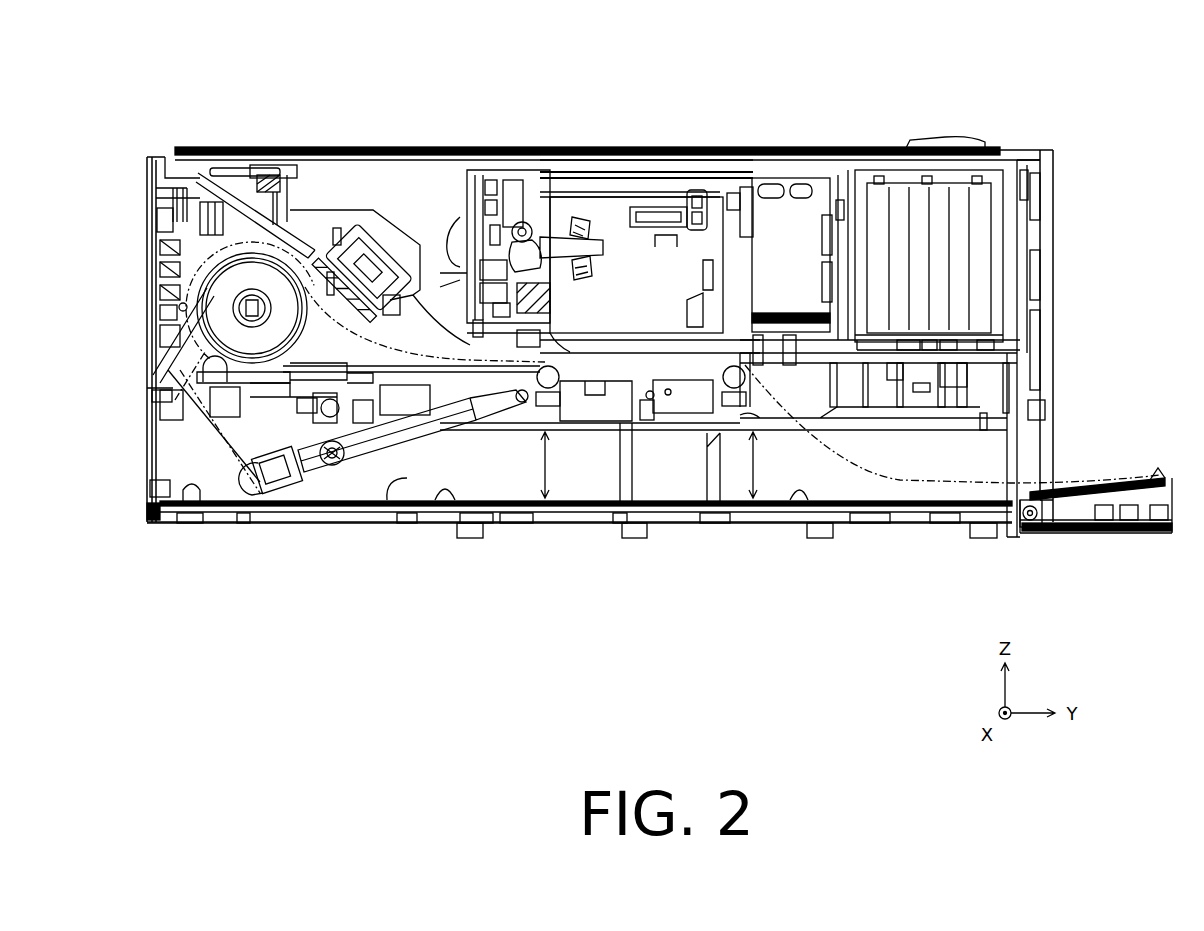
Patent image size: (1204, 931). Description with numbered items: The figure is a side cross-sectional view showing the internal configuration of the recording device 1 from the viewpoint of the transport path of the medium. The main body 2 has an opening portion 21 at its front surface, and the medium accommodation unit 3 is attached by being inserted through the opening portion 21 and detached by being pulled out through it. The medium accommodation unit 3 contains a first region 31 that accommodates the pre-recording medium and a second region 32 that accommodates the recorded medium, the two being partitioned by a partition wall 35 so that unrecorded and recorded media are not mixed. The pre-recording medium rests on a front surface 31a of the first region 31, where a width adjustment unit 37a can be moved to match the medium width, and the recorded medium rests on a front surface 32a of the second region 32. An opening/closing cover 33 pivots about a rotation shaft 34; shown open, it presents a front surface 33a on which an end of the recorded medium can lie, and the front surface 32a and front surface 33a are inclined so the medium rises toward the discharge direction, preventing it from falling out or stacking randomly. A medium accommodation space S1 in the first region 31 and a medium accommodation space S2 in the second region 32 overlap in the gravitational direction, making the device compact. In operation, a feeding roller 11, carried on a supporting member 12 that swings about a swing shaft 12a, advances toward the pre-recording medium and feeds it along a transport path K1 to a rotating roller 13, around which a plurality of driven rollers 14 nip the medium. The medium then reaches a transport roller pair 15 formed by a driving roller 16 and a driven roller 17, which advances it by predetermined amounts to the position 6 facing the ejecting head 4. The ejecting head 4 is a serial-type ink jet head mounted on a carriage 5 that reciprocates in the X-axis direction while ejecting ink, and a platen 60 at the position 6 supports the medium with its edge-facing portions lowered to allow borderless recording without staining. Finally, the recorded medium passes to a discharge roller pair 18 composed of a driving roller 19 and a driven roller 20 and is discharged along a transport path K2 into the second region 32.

The recording device 1 is at (1077, 98).
The main body 2 is at (797, 148).
The medium accommodation unit 3 is at (1087, 543).
The ejecting head 4 is at (657, 350).
The carriage 5 is at (633, 272).
The position facing the ejecting head 6 is at (615, 413).
The feeding roller 11 is at (248, 500).
The supporting member 12 is at (313, 473).
The swing shaft 12a is at (524, 402).
The rotating roller 13 is at (250, 280).
The driven rollers 14 is at (208, 197).
The transport roller pair 15 is at (507, 90).
The driving roller 16 is at (528, 180).
The driven roller 17 is at (560, 327).
The discharge roller pair 18 is at (722, 108).
The driving roller 19 is at (733, 165).
The driven roller 20 is at (765, 307).
The opening portion 21 is at (1072, 421).
The first region 31 is at (531, 513).
The front surface 31a is at (445, 488).
The second region 32 is at (927, 500).
The front surface 32a is at (810, 487).
The opening/closing cover 33 is at (1117, 528).
The front surface 33a is at (1162, 537).
The rotation shaft 34 is at (1032, 535).
The partition wall 35 is at (703, 463).
The width adjustment unit 37a is at (408, 478).
The platen 60 is at (583, 405).
The transport path K1 is at (199, 500).
The transport path K2 is at (873, 477).
The medium accommodation space S1 is at (558, 465).
The medium accommodation space S2 is at (767, 465).